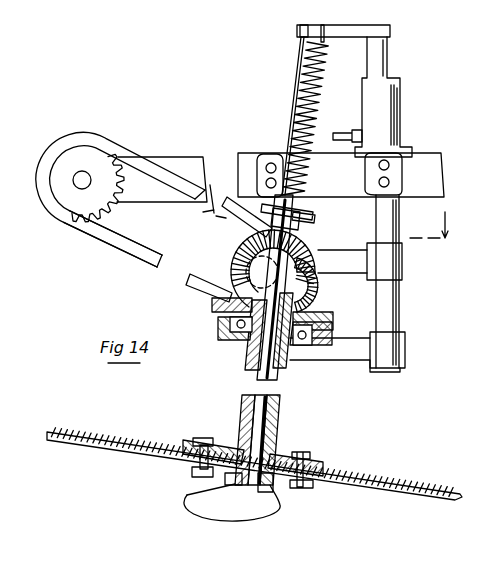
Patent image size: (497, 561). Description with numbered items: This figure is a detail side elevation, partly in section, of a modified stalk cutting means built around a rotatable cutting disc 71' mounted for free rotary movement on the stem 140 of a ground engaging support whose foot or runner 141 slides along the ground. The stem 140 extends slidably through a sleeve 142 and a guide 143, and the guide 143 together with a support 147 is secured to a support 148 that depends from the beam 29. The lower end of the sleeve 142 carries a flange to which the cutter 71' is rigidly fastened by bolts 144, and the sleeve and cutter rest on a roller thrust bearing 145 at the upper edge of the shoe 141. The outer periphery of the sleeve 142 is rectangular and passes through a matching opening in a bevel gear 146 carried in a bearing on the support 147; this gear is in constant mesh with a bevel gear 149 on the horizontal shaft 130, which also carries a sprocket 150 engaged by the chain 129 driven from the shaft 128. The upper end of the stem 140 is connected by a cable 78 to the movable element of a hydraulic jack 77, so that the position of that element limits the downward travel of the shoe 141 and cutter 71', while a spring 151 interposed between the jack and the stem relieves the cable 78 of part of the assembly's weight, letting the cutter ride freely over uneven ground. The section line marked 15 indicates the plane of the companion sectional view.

The shaft 128 is at (92, 175).
The chain 129 is at (140, 253).
The section line 15 is at (327, 219).
The beam 29 is at (427, 175).
The hydraulic jack 77 is at (402, 118).
The cable 78 is at (297, 93).
The spring 151 is at (318, 118).
The support 148 is at (389, 312).
The support 147 is at (346, 362).
The bevel gear 149 is at (234, 258).
The sprocket 150 is at (233, 283).
The guide 143 is at (310, 252).
The shaft 130 is at (321, 284).
The sleeve 142 is at (286, 372).
The bevel gear 146 is at (322, 314).
The stem 140 is at (277, 430).
The rotatable cutting disc 71' is at (265, 468).
The bolts 144 is at (305, 458).
The roller thrust bearing 145 is at (287, 490).
The runner 141 is at (263, 508).